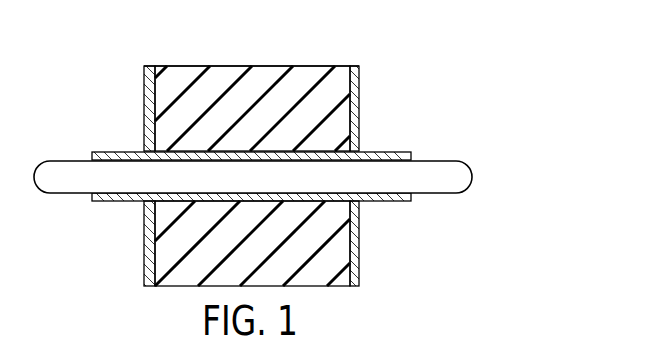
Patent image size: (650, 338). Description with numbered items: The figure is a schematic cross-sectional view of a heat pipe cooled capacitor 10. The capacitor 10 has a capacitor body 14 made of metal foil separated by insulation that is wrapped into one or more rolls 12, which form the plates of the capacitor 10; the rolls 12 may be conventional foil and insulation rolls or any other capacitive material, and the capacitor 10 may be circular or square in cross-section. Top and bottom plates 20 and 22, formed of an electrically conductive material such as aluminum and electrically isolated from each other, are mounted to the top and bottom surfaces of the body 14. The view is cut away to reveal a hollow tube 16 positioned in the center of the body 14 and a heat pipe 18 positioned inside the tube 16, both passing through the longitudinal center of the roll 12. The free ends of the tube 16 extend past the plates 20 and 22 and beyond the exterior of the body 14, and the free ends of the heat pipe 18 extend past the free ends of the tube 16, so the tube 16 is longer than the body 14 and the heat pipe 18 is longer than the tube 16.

The heat pipe cooled capacitor 10 is at (484, 104).
The roll 12 is at (277, 77).
The capacitor body 14 is at (208, 66).
The hollow tube 16 is at (372, 213).
The heat pipe 18 is at (454, 180).
The top plate 20 is at (360, 126).
The bottom plate 22 is at (144, 125).